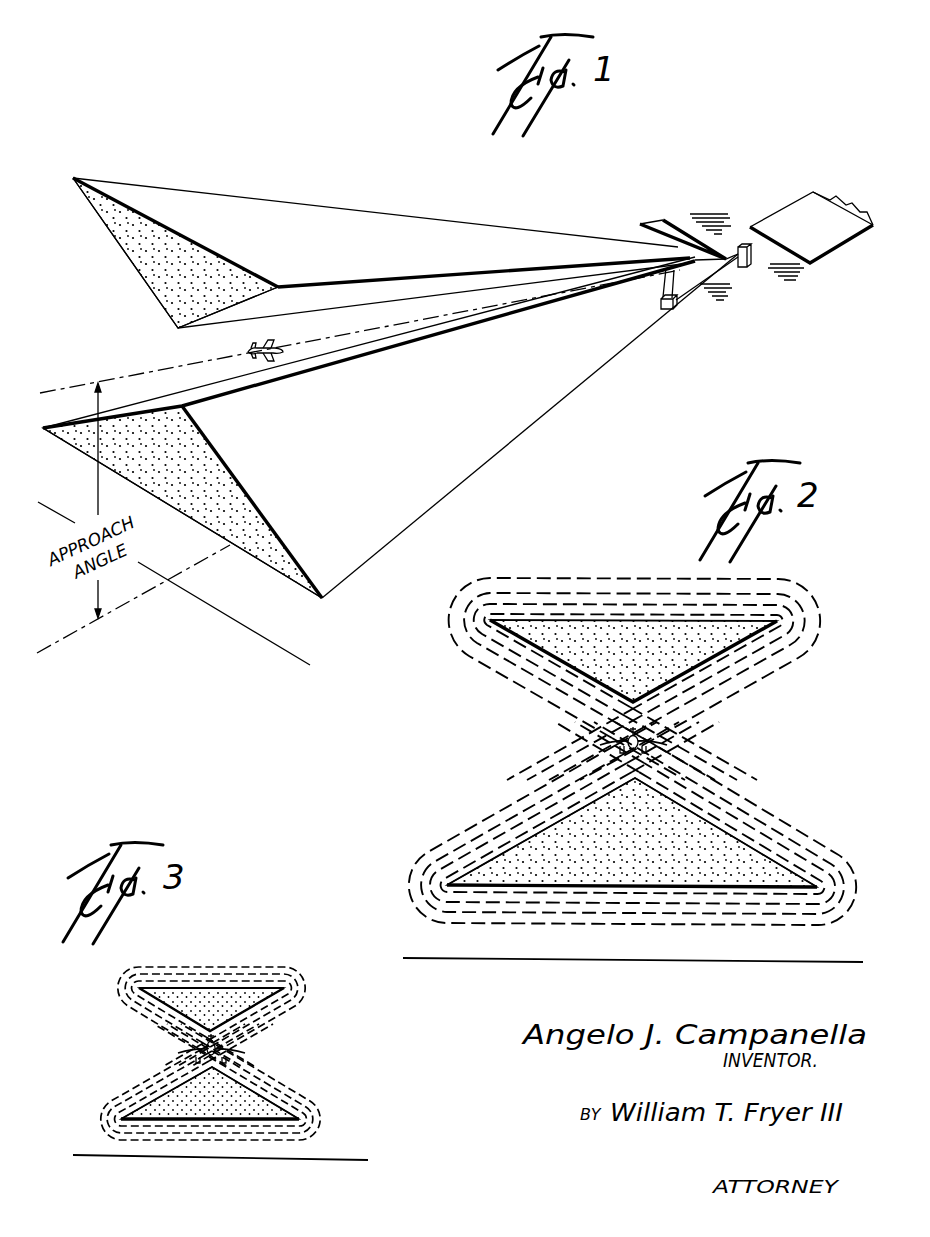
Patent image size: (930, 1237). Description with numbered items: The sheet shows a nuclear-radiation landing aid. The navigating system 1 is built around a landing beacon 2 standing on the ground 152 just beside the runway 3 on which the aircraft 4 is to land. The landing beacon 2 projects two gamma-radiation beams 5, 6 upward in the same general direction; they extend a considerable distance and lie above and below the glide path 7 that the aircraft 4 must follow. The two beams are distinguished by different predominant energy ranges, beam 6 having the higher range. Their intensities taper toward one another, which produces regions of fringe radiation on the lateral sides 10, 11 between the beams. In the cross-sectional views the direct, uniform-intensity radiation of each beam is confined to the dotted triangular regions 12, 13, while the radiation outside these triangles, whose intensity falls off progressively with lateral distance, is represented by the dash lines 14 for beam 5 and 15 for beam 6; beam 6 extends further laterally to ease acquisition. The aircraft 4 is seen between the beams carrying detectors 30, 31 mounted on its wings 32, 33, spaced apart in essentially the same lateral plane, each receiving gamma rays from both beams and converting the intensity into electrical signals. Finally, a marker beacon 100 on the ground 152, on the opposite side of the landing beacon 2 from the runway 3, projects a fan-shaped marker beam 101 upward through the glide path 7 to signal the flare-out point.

In FIG. 1, the navigating system 1 is at (418, 205).
In FIG. 1, the landing beacon 2 is at (750, 270).
In FIG. 1, the runway 3 is at (820, 243).
In FIG. 1, the aircraft 4 is at (268, 358).
In FIG. 2, the aircraft 4 is at (680, 741).
In FIG. 3, the aircraft 4 is at (211, 1048).
In FIG. 1, the beam 5 is at (303, 221).
In FIG. 2, the beam 5 is at (570, 630).
In FIG. 3, the beam 5 is at (193, 988).
In FIG. 1, the beam 6 is at (552, 392).
In FIG. 2, the beam 6 is at (660, 863).
In FIG. 3, the beam 6 is at (255, 1108).
In FIG. 1, the glide path 7 is at (357, 330).
In FIG. 2, the lateral side 10 is at (565, 726).
In FIG. 3, the lateral side 10 is at (270, 1026).
In FIG. 2, the lateral side 11 is at (720, 770).
In FIG. 3, the lateral side 11 is at (158, 1032).
In FIG. 2, the triangle 12 is at (657, 618).
In FIG. 3, the triangle 12 is at (238, 988).
In FIG. 2, the triangle 13 is at (440, 890).
In FIG. 3, the triangle 13 is at (115, 1118).
In FIG. 2, the dash lines 14 is at (470, 645).
In FIG. 3, the dash lines 14 is at (300, 1000).
In FIG. 2, the dash lines 15 is at (430, 858).
In FIG. 3, the dash lines 15 is at (310, 1120).
In FIG. 2, the detector 30 is at (695, 760).
In FIG. 3, the detector 30 is at (188, 1058).
In FIG. 2, the detector 31 is at (600, 753).
In FIG. 3, the detector 31 is at (238, 1060).
In FIG. 2, the wing 32 is at (665, 748).
In FIG. 3, the wing 32 is at (180, 1051).
In FIG. 2, the wing 33 is at (610, 744).
In FIG. 3, the wing 33 is at (240, 1050).
In FIG. 1, the marker beacon 100 is at (672, 312).
In FIG. 1, the marker beam 101 is at (641, 223).
In FIG. 1, the ground 152 is at (230, 613).
In FIG. 2, the ground 152 is at (460, 958).
In FIG. 3, the ground 152 is at (350, 1160).